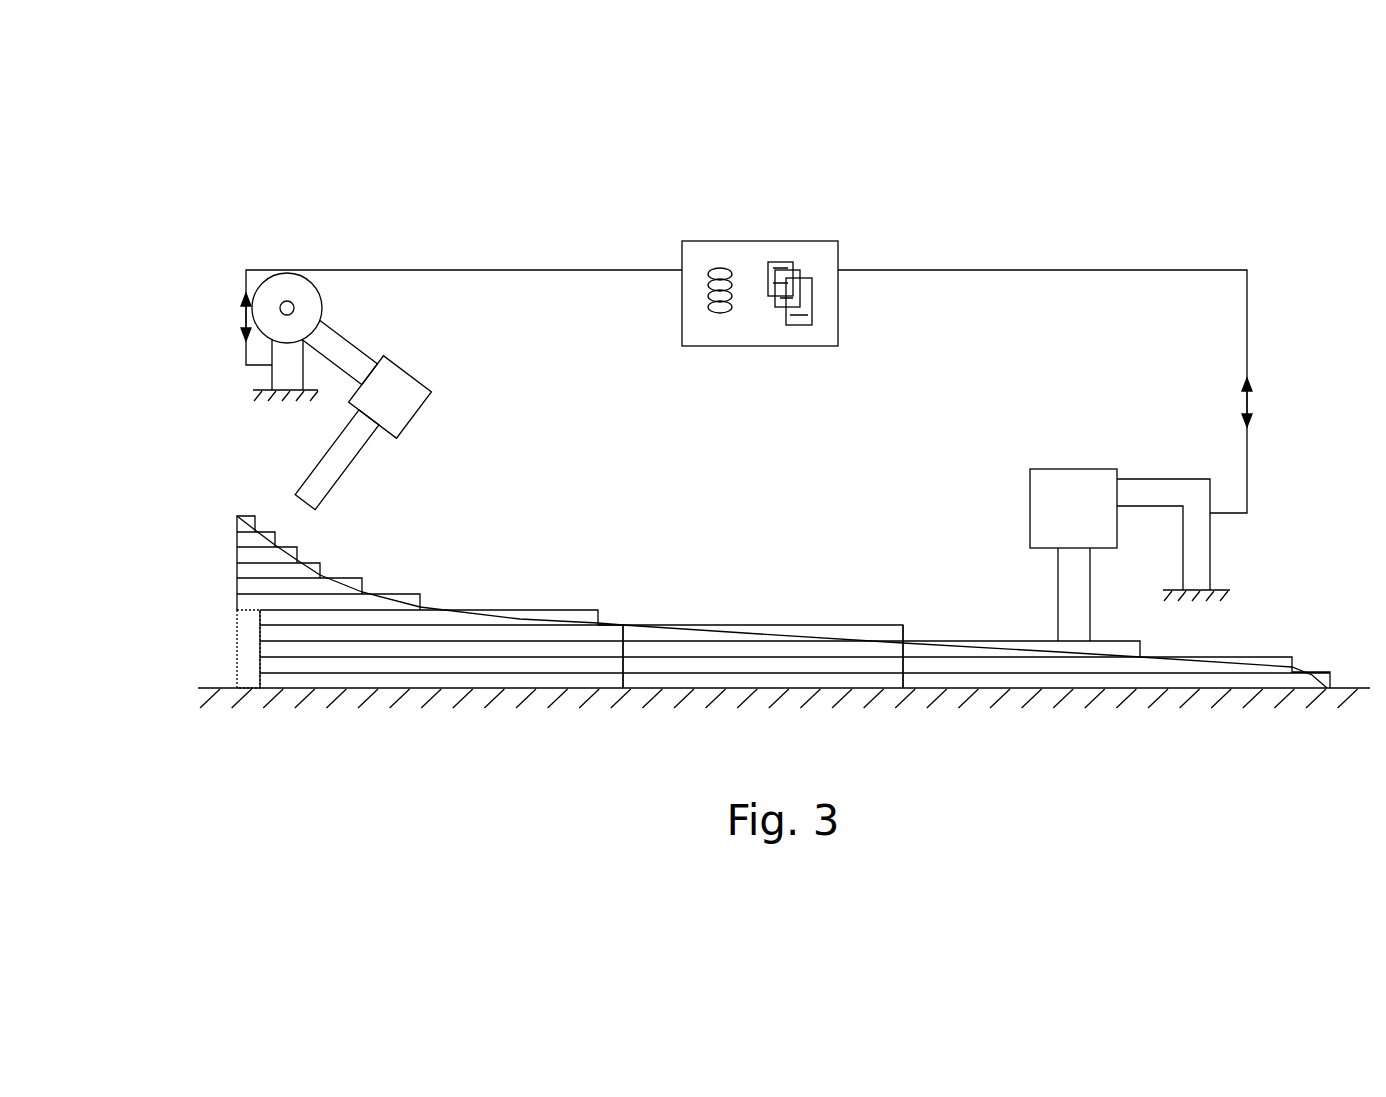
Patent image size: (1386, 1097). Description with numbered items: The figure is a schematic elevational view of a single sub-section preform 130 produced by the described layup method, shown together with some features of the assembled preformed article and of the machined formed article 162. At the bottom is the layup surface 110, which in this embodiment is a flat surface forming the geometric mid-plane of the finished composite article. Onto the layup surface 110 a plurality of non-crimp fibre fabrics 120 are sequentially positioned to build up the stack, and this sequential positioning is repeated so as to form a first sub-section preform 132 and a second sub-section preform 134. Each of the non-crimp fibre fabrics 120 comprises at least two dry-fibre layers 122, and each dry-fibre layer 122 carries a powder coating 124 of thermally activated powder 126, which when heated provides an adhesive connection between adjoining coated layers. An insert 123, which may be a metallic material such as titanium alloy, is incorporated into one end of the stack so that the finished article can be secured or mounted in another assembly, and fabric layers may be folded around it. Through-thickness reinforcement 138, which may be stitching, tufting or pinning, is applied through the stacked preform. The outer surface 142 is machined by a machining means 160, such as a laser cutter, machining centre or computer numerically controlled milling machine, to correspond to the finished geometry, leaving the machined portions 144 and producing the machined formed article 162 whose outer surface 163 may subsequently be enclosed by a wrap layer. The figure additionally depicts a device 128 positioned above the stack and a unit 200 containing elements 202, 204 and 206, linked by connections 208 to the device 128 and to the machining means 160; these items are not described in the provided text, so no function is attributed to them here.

The layup surface 110 is at (210, 685).
The non-crimp fibre fabrics 120 is at (310, 650).
The dry-fibre layers 122 is at (527, 635).
The insert 123 is at (248, 645).
The powder coating 124 is at (787, 650).
The thermally activated powder 126 is at (683, 658).
The compaction device 128 is at (421, 366).
The sub-section preform 130 is at (440, 532).
The first sub-section preform 132 is at (465, 548).
The second sub-section preform 134 is at (498, 560).
The through-thickness reinforcement 138 is at (622, 673).
The outer surface 142 is at (500, 615).
The machined portions 144 is at (322, 566).
The machining means 160 is at (1122, 460).
The machined formed article 162 is at (1027, 650).
The outer surface of the machined formed article 163 is at (918, 640).
The controller 200 is at (840, 297).
The data / program files 202 is at (782, 267).
The coil / actuator 204 is at (720, 313).
The processor 206 is at (768, 332).
The signal connections 208 is at (246, 283).